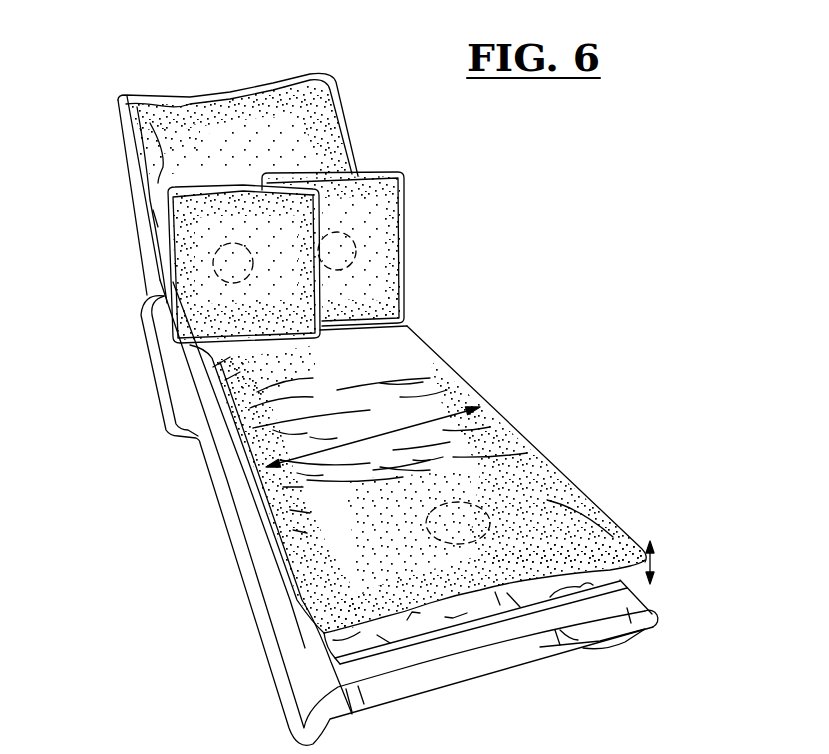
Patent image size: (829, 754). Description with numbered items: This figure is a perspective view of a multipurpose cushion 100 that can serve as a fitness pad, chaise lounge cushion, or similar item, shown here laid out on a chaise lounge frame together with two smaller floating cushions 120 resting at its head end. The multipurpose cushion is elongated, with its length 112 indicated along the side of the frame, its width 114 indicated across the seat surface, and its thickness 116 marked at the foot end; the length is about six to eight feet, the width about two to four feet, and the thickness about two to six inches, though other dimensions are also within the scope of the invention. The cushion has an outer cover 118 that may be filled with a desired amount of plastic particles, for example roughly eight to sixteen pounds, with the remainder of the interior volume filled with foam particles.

The lounge chair cushion assembly 100 is at (183, 105).
The length 112 is at (294, 647).
The width 114 is at (452, 415).
The thickness 116 is at (658, 556).
The outer cover 118 is at (565, 487).
The floating cushions 120 is at (343, 192).